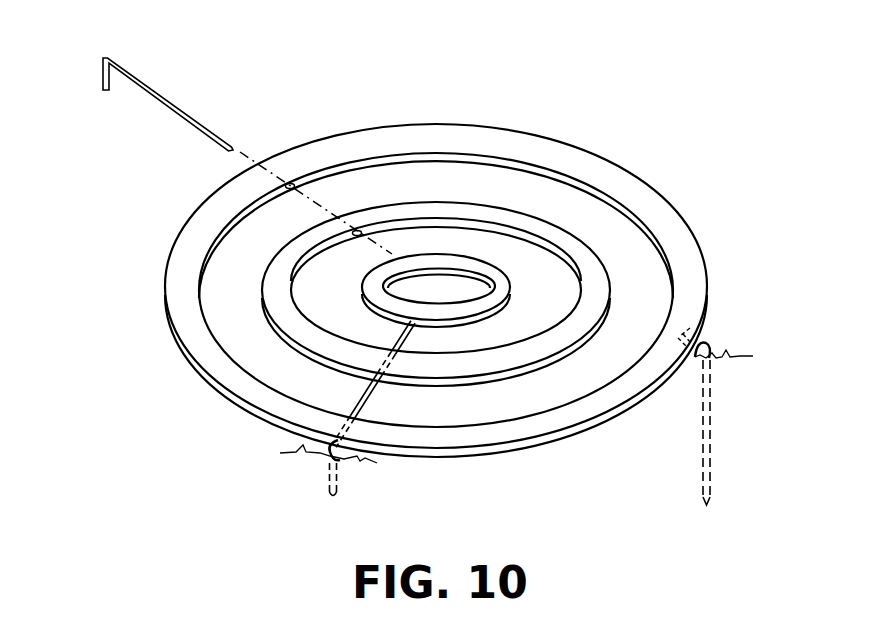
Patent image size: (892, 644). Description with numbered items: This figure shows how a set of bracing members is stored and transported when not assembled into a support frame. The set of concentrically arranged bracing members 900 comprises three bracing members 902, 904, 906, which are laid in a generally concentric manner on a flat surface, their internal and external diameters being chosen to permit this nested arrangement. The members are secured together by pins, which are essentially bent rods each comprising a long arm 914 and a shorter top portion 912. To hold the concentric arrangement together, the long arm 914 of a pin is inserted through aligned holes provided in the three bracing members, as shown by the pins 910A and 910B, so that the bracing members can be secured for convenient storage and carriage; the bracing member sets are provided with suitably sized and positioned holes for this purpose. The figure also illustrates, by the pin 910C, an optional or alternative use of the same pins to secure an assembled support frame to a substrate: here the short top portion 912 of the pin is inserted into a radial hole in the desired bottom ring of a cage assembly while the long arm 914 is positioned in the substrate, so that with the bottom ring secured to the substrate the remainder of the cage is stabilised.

The set of concentrically arranged bracing members 900 is at (645, 134).
The bracing member 902 is at (436, 262).
The bracing member 904 is at (450, 208).
The bracing member 906 is at (472, 133).
The pin 910A is at (146, 62).
The pin 910B is at (336, 507).
The pin 910C is at (686, 490).
The shorter top portion 912 is at (690, 328).
The long arm 914 is at (710, 403).